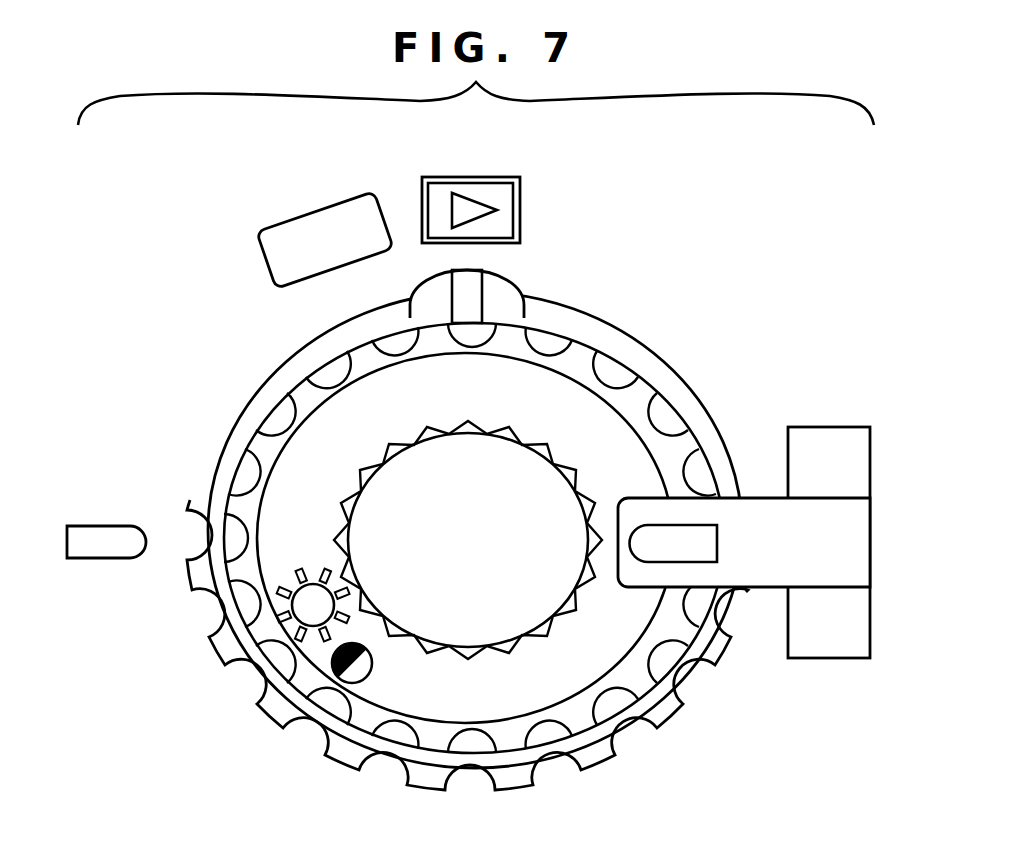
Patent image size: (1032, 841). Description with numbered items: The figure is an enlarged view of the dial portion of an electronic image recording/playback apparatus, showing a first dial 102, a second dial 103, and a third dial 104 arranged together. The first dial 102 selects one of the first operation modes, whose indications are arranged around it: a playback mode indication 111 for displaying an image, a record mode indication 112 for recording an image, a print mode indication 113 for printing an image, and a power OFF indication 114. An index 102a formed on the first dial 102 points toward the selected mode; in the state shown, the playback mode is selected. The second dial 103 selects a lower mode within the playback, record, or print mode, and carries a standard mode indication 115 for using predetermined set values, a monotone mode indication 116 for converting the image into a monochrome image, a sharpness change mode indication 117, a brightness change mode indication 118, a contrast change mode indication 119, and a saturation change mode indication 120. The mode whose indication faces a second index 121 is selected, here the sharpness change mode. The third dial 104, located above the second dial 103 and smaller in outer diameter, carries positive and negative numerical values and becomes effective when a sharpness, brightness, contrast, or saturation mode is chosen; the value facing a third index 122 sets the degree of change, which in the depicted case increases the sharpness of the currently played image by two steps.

The first dial 102 is at (672, 684).
The index 102a is at (482, 273).
The second dial 103 is at (618, 723).
The third dial 104 is at (448, 437).
The playback mode indication 111 is at (521, 201).
The record mode indication 112 is at (625, 212).
The print mode indication 113 is at (808, 322).
The power OFF indication 114 is at (282, 222).
The standard mode indication 115 is at (335, 417).
The monotone mode indication 116 is at (293, 467).
The sharpness change mode indication 117 is at (263, 530).
The brightness change mode indication 118 is at (283, 625).
The contrast change mode indication 119 is at (335, 679).
The saturation change mode indication 120 is at (405, 722).
The second index 121 is at (100, 560).
The third index 122 is at (718, 543).